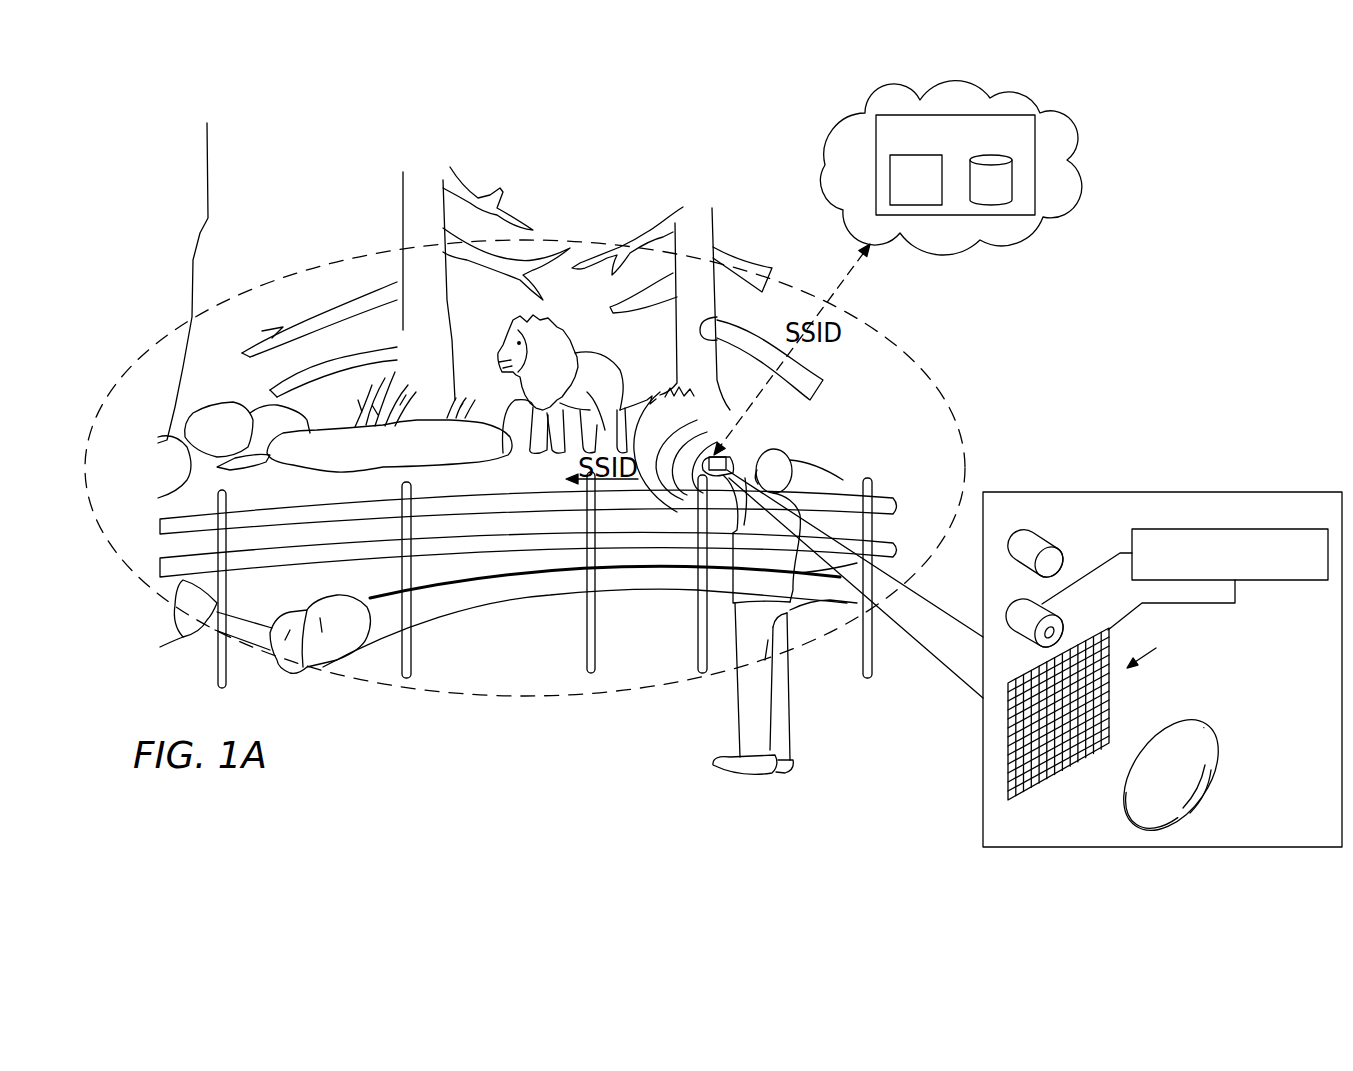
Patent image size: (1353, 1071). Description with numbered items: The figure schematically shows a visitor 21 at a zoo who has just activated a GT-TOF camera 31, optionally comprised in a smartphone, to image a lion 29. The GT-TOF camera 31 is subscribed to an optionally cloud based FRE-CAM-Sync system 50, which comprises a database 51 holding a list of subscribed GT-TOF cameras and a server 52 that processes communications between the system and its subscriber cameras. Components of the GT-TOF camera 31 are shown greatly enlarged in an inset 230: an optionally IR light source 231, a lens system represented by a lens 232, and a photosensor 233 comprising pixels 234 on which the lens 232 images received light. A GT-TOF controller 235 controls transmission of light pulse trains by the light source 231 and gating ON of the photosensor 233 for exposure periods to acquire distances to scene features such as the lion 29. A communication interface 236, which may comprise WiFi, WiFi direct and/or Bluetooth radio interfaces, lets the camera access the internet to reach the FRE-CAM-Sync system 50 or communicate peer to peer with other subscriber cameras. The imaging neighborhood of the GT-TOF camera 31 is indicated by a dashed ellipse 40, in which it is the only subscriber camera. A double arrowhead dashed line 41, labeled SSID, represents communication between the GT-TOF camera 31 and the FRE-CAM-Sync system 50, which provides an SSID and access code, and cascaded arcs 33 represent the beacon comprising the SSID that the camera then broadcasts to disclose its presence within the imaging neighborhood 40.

The visitor 21 is at (793, 455).
The lion 29 is at (585, 348).
The GT-TOF camera 31 is at (705, 478).
The cascaded arcs 33 is at (688, 505).
The dashed ellipse 40 is at (961, 439).
The double arrowhead dashed line 41 is at (844, 293).
The FRE-CAM-Sync system 50 is at (976, 168).
The database 51 is at (991, 180).
The server 52 is at (916, 180).
The inset 230 is at (1277, 492).
The light source 231 is at (1005, 605).
The lens 232 is at (1214, 729).
The photosensor 233 is at (1166, 650).
The pixels 234 is at (1012, 738).
The GT-TOF controller 235 is at (1290, 581).
The communication interface 236 is at (1058, 546).